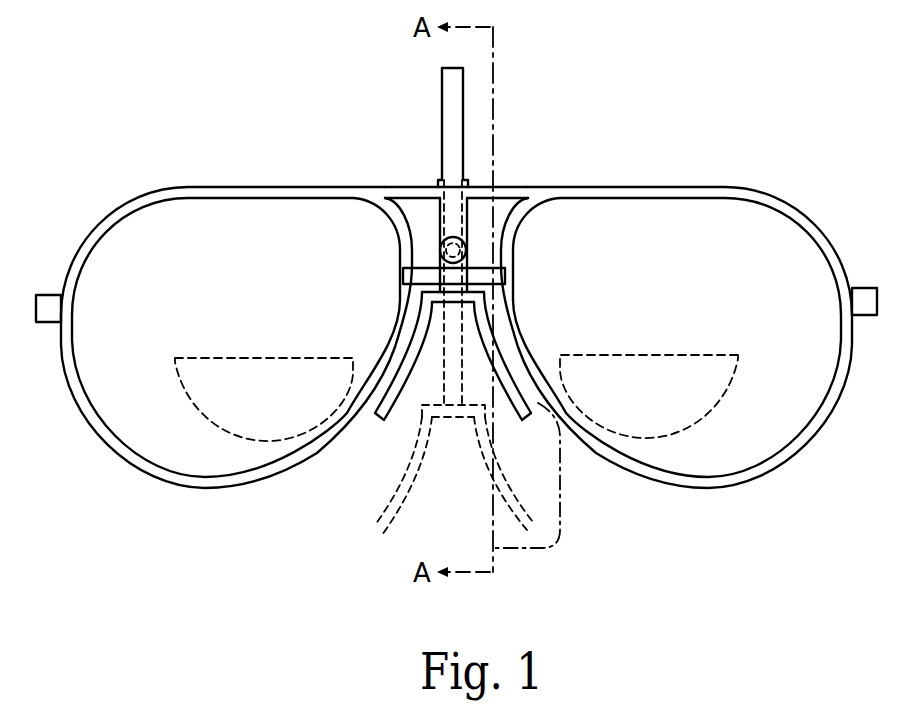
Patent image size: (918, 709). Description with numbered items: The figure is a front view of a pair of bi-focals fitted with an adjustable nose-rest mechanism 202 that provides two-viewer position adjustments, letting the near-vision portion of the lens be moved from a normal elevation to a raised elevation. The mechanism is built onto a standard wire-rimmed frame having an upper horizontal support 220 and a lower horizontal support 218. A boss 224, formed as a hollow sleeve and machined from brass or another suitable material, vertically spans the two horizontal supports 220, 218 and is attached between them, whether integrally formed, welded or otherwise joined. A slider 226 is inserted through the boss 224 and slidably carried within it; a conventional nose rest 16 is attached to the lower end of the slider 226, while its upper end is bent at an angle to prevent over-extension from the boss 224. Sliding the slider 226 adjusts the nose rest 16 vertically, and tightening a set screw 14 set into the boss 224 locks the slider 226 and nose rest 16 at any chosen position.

The adjustable nose-rest mechanism 202 is at (262, 502).
The upper horizontal support 220 is at (543, 190).
The slider 226 is at (464, 88).
The boss 224 is at (439, 220).
The set screw 14 is at (467, 248).
The lower horizontal support 218 is at (508, 277).
The nose rest 16 is at (563, 481).